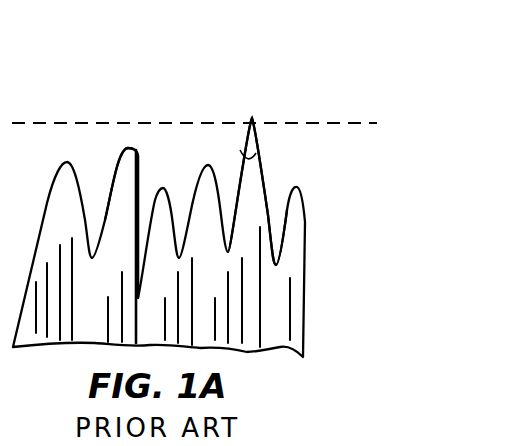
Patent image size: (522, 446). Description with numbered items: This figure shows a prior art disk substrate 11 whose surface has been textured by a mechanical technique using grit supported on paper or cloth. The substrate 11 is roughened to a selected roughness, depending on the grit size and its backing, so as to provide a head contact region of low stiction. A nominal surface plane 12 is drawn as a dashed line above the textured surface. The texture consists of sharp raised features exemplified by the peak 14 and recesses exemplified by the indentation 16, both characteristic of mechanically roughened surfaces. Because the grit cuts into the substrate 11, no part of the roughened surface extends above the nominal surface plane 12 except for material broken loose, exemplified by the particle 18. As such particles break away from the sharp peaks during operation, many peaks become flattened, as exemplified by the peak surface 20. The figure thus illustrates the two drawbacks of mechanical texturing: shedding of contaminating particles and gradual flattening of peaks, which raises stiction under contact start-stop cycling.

The disk substrate 11 is at (303, 312).
The nominal surface plane 12 is at (337, 123).
The peak 14 is at (138, 157).
The indentation 16 is at (277, 255).
The particle 18 is at (252, 118).
The peak surface 20 is at (255, 156).